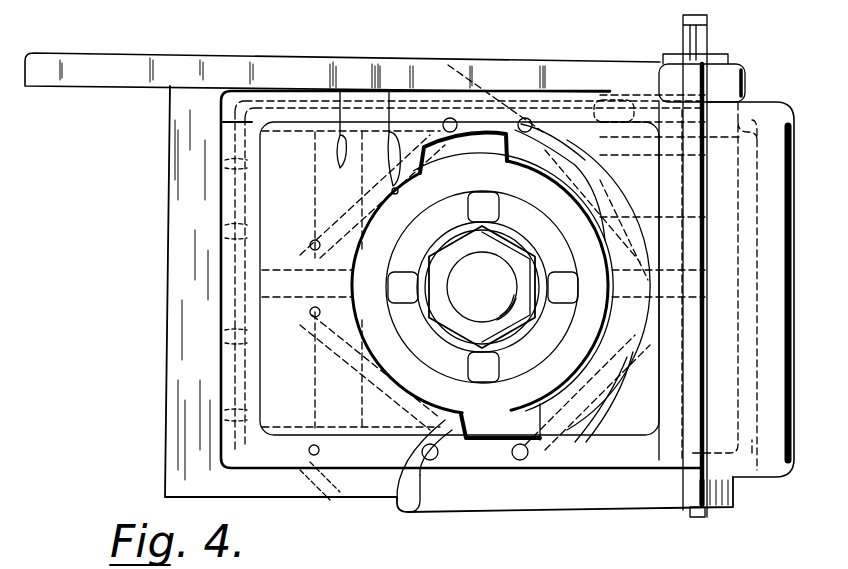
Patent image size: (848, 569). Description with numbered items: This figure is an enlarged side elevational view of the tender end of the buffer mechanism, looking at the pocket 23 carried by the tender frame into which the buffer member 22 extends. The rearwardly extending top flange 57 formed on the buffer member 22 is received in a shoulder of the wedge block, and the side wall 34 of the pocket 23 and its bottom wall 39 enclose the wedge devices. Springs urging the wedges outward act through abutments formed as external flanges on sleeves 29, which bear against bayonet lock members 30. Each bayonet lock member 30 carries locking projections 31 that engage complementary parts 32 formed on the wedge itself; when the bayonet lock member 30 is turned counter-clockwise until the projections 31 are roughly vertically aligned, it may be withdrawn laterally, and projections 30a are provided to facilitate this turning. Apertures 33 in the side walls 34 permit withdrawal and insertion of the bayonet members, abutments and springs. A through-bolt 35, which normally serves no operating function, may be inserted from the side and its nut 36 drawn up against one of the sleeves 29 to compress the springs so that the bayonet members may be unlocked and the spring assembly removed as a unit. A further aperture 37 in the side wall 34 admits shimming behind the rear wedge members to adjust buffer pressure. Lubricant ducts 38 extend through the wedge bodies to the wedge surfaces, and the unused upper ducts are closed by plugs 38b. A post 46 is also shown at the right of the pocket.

The buffer member 22 is at (765, 460).
The pocket 23 is at (490, 78).
The sleeve 29 is at (512, 240).
The bayonet lock member 30 is at (482, 286).
The projection 30a is at (562, 278).
The locking projection 31 is at (574, 125).
The complementary part 32 is at (515, 138).
The aperture 33 is at (392, 175).
The side wall 34 is at (343, 135).
The through-bolt 35 is at (482, 287).
The nut 36 is at (440, 263).
The aperture 37 is at (225, 270).
The lubricant duct 38 is at (313, 457).
The plug 38b is at (450, 118).
The bottom wall 39 is at (340, 492).
The post 46 is at (708, 36).
The top flange 57 is at (640, 112).